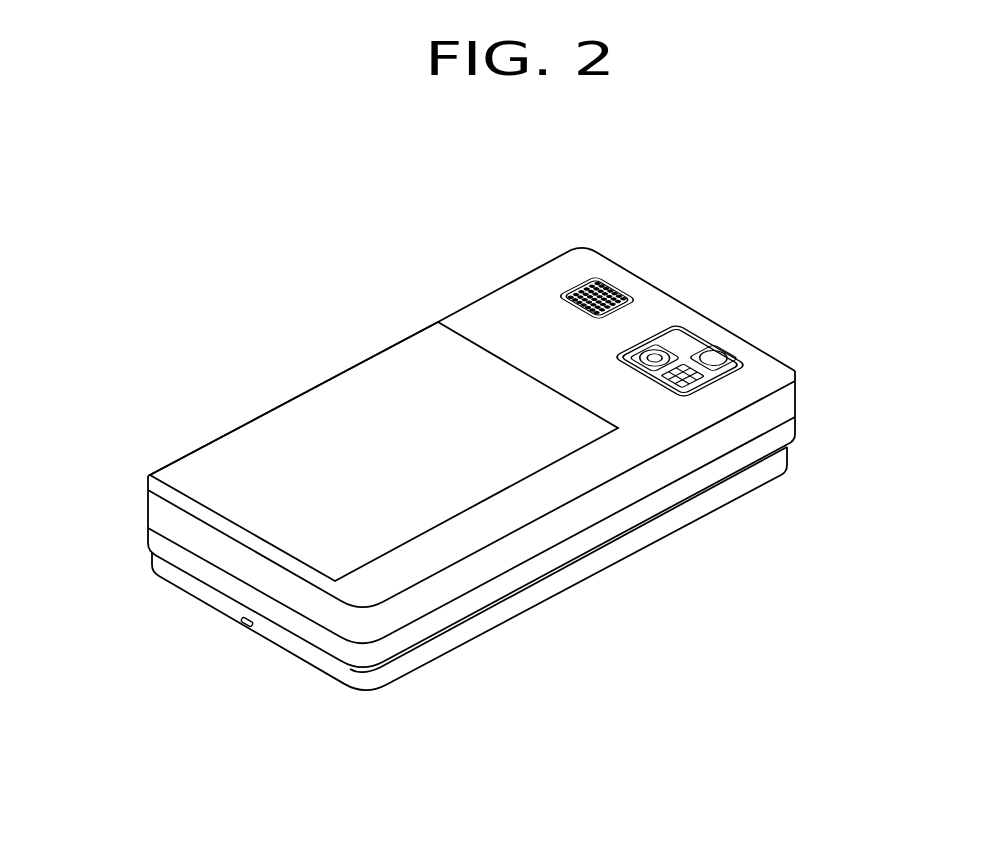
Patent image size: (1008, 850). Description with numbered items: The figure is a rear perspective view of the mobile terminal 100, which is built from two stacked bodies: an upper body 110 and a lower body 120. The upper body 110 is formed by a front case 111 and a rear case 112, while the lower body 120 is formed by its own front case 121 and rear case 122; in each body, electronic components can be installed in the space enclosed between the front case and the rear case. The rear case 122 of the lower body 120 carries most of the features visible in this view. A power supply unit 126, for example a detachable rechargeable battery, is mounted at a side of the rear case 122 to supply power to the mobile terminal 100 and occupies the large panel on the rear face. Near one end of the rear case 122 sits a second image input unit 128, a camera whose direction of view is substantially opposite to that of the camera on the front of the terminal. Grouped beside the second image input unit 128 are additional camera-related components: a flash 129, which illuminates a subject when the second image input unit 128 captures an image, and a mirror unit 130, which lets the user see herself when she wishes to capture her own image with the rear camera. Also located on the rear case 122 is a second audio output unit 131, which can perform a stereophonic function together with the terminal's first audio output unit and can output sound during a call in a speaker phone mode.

The mobile terminal 100 is at (372, 292).
The upper body 110 is at (142, 564).
The front case 111 is at (775, 466).
The rear case 112 is at (790, 445).
The lower body 120 is at (142, 500).
The front case 121 is at (783, 430).
The rear case 122 is at (782, 400).
The power supply unit 126 is at (343, 406).
The second image input unit 128 is at (657, 355).
The flash 129 is at (706, 379).
The mirror unit 130 is at (715, 357).
The second audio output unit 131 is at (600, 290).